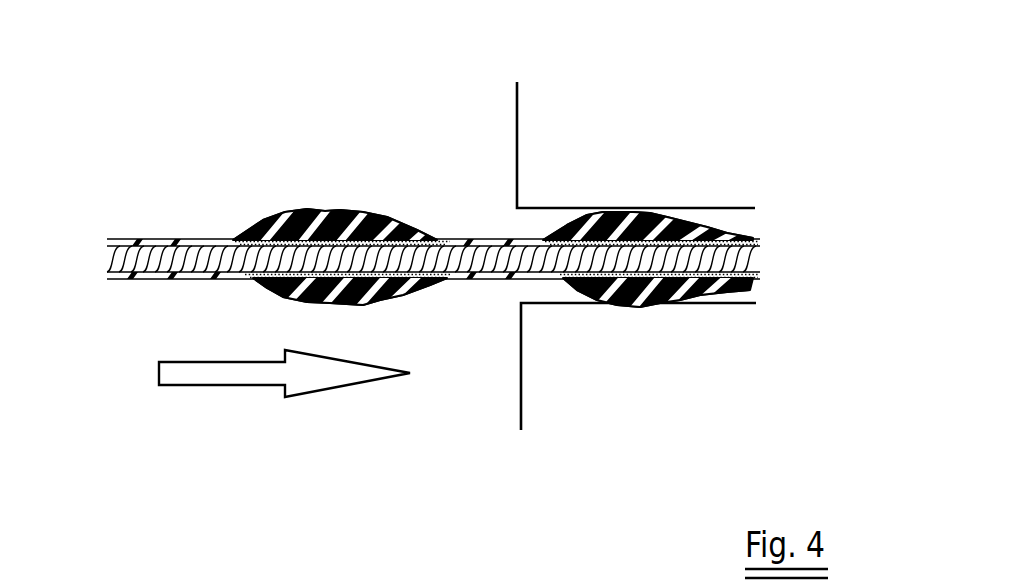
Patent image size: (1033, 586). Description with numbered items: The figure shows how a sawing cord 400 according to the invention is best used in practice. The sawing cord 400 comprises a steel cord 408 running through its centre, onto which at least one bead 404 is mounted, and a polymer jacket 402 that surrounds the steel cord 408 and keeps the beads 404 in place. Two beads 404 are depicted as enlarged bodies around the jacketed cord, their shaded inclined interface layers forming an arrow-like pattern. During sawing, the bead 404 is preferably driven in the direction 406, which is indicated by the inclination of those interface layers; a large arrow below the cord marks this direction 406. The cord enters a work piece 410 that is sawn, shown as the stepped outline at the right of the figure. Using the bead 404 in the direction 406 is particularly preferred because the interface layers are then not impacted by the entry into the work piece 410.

The sawing cord 400 is at (300, 127).
The polymer jacket 402 is at (210, 242).
The bead 404 is at (467, 202).
The direction 406 is at (252, 375).
The steel cord 408 is at (135, 258).
The work piece 410 is at (623, 165).